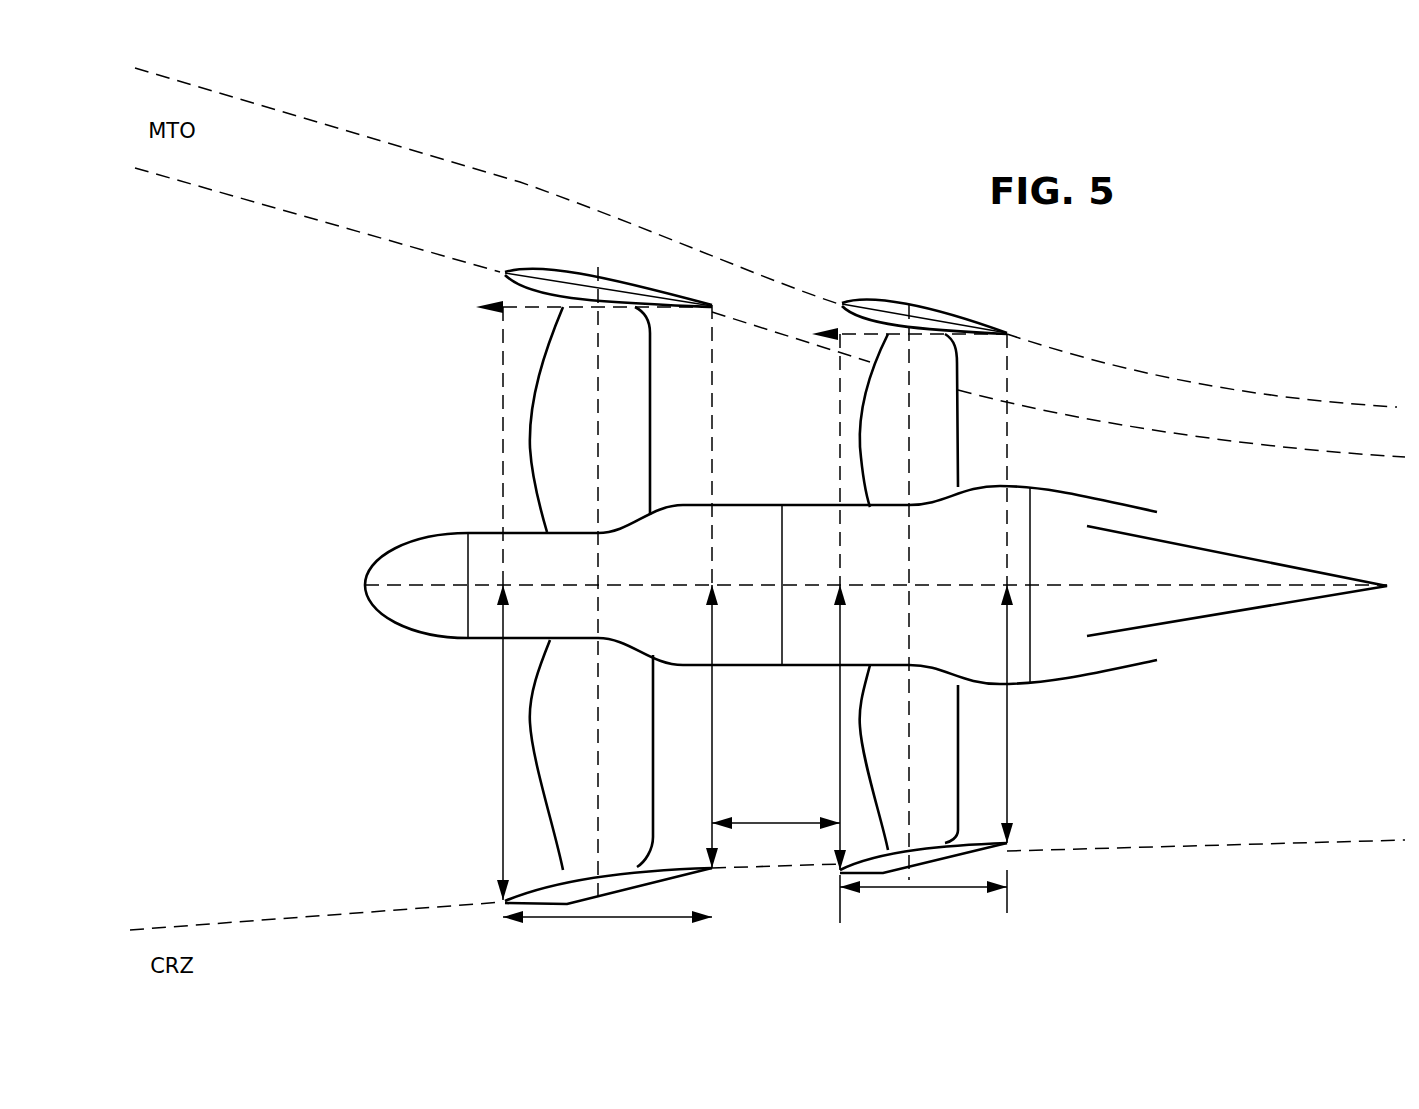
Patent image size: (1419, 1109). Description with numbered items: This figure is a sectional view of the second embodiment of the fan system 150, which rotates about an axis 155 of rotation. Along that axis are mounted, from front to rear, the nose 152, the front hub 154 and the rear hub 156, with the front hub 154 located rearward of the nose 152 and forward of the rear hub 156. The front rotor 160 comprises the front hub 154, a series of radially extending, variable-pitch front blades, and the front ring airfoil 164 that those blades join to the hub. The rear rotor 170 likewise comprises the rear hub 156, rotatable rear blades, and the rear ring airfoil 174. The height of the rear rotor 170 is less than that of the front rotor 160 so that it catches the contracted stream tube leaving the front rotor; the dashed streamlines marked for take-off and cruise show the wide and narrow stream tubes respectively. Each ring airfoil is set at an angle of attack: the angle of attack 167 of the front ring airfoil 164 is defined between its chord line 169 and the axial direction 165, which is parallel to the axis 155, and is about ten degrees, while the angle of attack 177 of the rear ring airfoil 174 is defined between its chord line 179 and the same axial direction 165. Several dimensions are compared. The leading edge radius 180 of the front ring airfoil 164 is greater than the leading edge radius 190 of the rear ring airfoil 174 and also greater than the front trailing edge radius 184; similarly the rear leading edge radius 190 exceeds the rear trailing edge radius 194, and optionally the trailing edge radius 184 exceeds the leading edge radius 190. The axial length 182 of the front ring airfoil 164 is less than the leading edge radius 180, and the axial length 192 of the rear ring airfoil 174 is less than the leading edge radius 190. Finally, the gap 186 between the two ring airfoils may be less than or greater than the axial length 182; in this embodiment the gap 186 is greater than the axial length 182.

The fan system 150 is at (330, 337).
The nose 152 is at (418, 540).
The front hub 154 is at (482, 545).
The axis 155 is at (428, 587).
The rear hub 156 is at (1018, 498).
The front rotor 160 is at (694, 601).
The front ring airfoil 164 is at (553, 907).
The axial direction 165 is at (572, 303).
The angle of attack 167 is at (545, 292).
The chord line 169 is at (550, 303).
The rear rotor 170 is at (864, 615).
The rear ring airfoil 174 is at (878, 875).
The angle of attack 177 is at (870, 327).
The chord line 179 is at (880, 305).
The leading edge radius 180 is at (482, 742).
The axial length 182 is at (607, 931).
The trailing edge radius 184 is at (730, 726).
The gap 186 is at (776, 836).
The leading edge radius 190 is at (820, 727).
The axial length 192 is at (923, 896).
The trailing edge radius 194 is at (1029, 714).